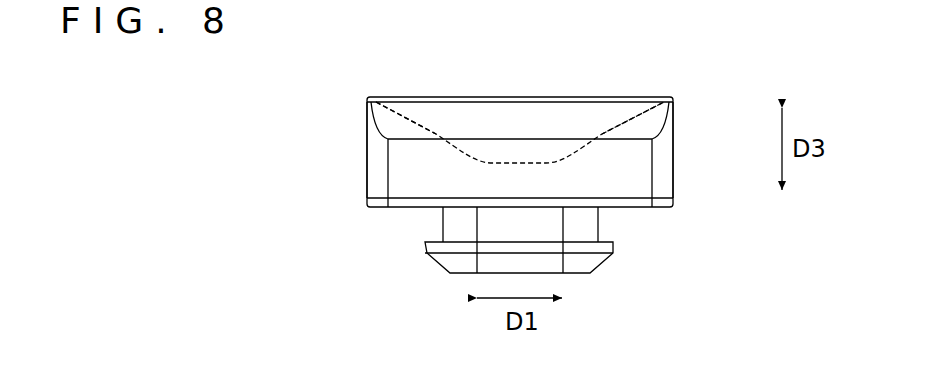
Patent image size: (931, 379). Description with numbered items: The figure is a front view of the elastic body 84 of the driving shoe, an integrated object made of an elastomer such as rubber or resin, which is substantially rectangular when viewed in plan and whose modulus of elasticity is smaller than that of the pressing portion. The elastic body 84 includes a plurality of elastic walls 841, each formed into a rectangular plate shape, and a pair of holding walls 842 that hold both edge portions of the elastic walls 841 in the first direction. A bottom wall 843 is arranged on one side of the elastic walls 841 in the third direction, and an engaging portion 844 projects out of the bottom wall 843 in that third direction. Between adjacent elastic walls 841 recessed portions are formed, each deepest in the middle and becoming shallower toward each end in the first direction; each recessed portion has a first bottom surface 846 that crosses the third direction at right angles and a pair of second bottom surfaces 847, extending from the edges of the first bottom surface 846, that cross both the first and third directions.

The elastic body 84 is at (292, 88).
The elastic wall 841 is at (483, 115).
The holding wall 842 is at (367, 132).
The bottom wall 843 is at (638, 205).
The engaging portion 844 is at (438, 262).
The first bottom surface 846 is at (532, 163).
The second bottom surface 847 is at (440, 139).